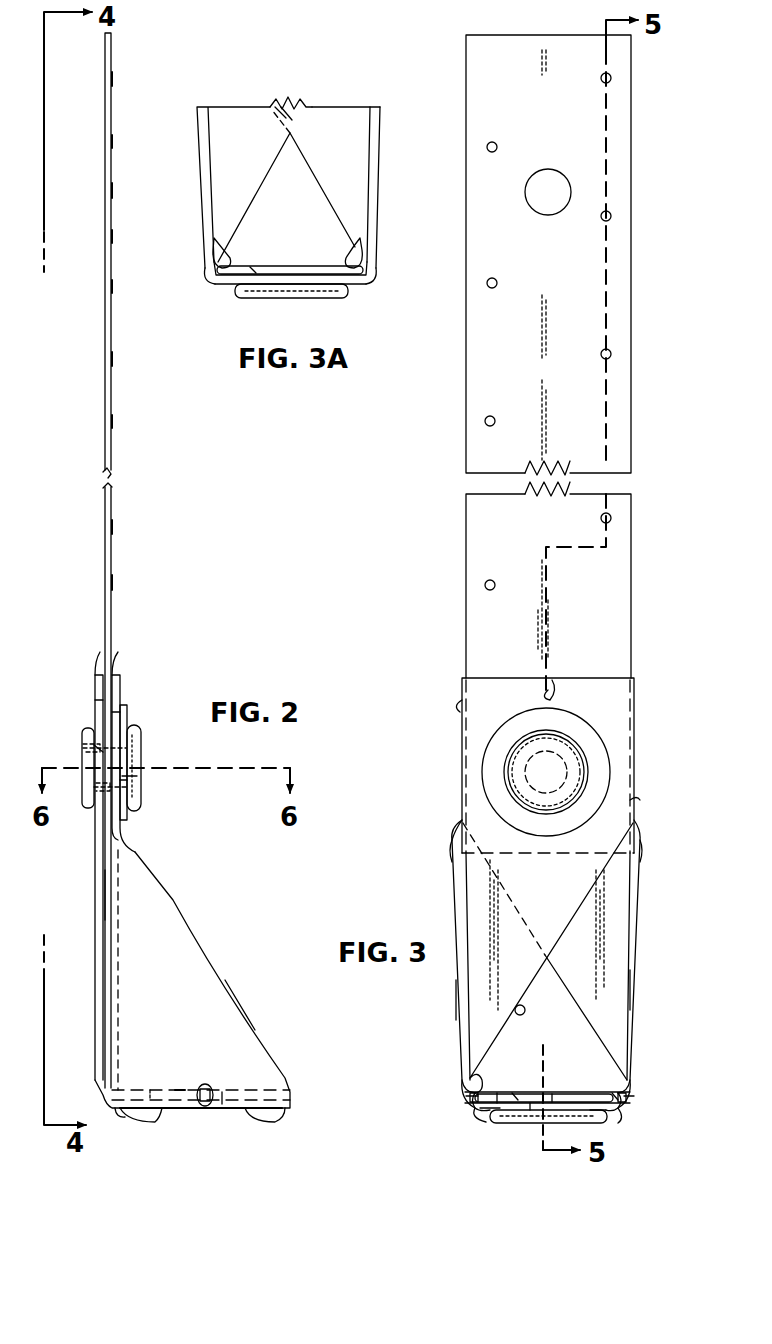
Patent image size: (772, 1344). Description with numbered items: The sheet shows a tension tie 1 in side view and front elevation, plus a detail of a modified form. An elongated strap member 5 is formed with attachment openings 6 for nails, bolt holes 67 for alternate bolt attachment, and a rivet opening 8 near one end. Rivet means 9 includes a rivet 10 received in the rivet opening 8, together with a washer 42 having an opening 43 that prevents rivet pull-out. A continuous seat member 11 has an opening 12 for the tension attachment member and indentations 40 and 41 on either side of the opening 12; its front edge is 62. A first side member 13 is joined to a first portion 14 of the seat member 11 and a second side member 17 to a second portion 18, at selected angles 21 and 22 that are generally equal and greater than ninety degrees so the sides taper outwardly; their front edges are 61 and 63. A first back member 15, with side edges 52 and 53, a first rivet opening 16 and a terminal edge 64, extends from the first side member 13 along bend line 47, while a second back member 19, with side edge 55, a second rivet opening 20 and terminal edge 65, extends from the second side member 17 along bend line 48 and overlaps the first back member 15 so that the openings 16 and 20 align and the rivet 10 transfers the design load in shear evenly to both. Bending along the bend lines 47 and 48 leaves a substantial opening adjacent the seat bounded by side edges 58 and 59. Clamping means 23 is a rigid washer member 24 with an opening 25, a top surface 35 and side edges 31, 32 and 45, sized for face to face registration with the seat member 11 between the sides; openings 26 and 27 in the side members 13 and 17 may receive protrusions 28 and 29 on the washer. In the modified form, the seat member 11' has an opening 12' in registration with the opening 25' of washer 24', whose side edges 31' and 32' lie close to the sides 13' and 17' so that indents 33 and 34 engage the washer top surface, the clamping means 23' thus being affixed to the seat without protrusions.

In FIG. 2, the tension tie 1 is at (128, 668).
In FIG. 3, the tension tie 1 is at (636, 668).
In FIG. 2, the elongated strap member 5 is at (112, 632).
In FIG. 3, the elongated strap member 5 is at (622, 255).
In FIG. 2, the attachment openings 6 is at (112, 78).
In FIG. 3, the attachment openings 6 is at (497, 145).
In FIG. 2, the rivet opening 8 is at (97, 787).
In FIG. 2, the rivet means 9 is at (142, 724).
In FIG. 3, the rivet means 9 is at (584, 742).
In FIG. 2, the rivet 10 is at (92, 748).
In FIG. 3, the rivet 10 is at (575, 770).
In FIG. 2, the continuous seat member 11 is at (240, 1078).
In FIG. 3, the continuous seat member 11 is at (547, 1081).
In FIG. 2, the seat opening 12 is at (201, 1134).
In FIG. 3, the seat opening 12 is at (548, 1136).
In FIG. 2, the first side member 13 is at (192, 984).
In FIG. 3, the first side member 13 is at (500, 956).
In FIG. 3, the first portion of the seat member 14 is at (482, 1112).
In FIG. 2, the first back member 15 is at (122, 676).
In FIG. 3, the first back member 15 is at (460, 690).
In FIG. 2, the first rivet opening 16 is at (132, 748).
In FIG. 3, the second side member 17 is at (654, 956).
In FIG. 3, the second portion of the seat member 18 is at (600, 1112).
In FIG. 2, the second back member 19 is at (92, 690).
In FIG. 3, the second back member 19 is at (584, 967).
In FIG. 2, the second rivet opening 20 is at (97, 752).
In FIG. 3, the first selected angle 21 is at (500, 1090).
In FIG. 3, the second selected angle 22 is at (616, 1085).
In FIG. 3, the clamping means 23 is at (537, 1053).
In FIG. 2, the washer member 24 is at (151, 1064).
In FIG. 3, the washer member 24 is at (544, 1073).
In FIG. 2, the washer opening 25 is at (175, 1068).
In FIG. 3, the washer opening 25 is at (533, 1139).
In FIG. 2, the first side member opening 26 is at (205, 1084).
In FIG. 3, the first side member opening 26 is at (466, 1078).
In FIG. 3, the second side member opening 27 is at (632, 1075).
In FIG. 2, the washer protrusion 28 is at (206, 1112).
In FIG. 3, the washer protrusion 28 is at (462, 1097).
In FIG. 3, the washer protrusion 29 is at (636, 1093).
In FIG. 3, the washer side edge 31 is at (447, 1104).
In FIG. 3, the washer side edge 32 is at (645, 1104).
In FIG. 3A, the indent 33 is at (218, 240).
In FIG. 3A, the indent 34 is at (360, 240).
In FIG. 3, the washer top surface 35 is at (550, 1093).
In FIG. 2, the seat indentation 40 is at (266, 1120).
In FIG. 3, the seat indentation 40 is at (498, 1120).
In FIG. 2, the seat indentation 41 is at (143, 1120).
In FIG. 2, the rivet washer 42 is at (124, 703).
In FIG. 3, the rivet washer 42 is at (577, 727).
In FIG. 2, the rivet washer opening 43 is at (137, 782).
In FIG. 3, the washer side edge 45 is at (472, 1082).
In FIG. 2, the bend line 47 is at (105, 890).
In FIG. 3, the bend line 47 is at (456, 836).
In FIG. 3, the bend line 48 is at (640, 838).
In FIG. 2, the first back member side edge 52 is at (116, 715).
In FIG. 3, the first back member side edge 52 is at (462, 710).
In FIG. 3, the first back member side edge 53 is at (637, 797).
In FIG. 2, the second back member side edge 55 is at (100, 703).
In FIG. 3, the opening side edge 58 is at (518, 1005).
In FIG. 3, the opening side edge 59 is at (565, 1000).
In FIG. 2, the front edge of first side member 61 is at (222, 975).
In FIG. 3, the front edge of first side member 61 is at (456, 992).
In FIG. 3, the front edge of seat member 62 is at (616, 1115).
In FIG. 3, the front edge of second side member 63 is at (632, 983).
In FIG. 2, the first back member end edge 64 is at (116, 674).
In FIG. 3, the first back member end edge 64 is at (558, 693).
In FIG. 2, the second back member end edge 65 is at (100, 672).
In FIG. 2, the bolt holes 67 is at (112, 190).
In FIG. 3, the bolt holes 67 is at (545, 178).
In FIG. 3A, the seat member 11' is at (286, 294).
In FIG. 3A, the seat opening 12' is at (291, 305).
In FIG. 3A, the first side 13' is at (264, 182).
In FIG. 3A, the second side 17' is at (394, 187).
In FIG. 3A, the channel 23' is at (286, 186).
In FIG. 3A, the washer 24' is at (279, 246).
In FIG. 3A, the washer opening 25' is at (290, 258).
In FIG. 3A, the washer side edge 31' is at (195, 292).
In FIG. 3A, the washer side edge 32' is at (395, 284).